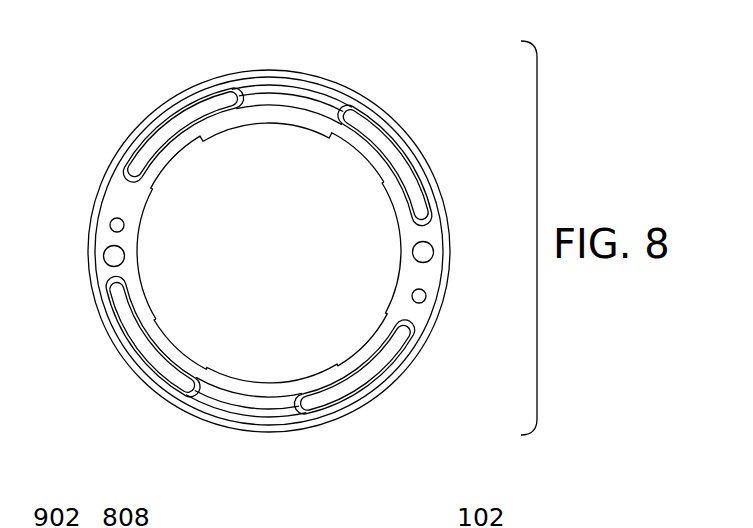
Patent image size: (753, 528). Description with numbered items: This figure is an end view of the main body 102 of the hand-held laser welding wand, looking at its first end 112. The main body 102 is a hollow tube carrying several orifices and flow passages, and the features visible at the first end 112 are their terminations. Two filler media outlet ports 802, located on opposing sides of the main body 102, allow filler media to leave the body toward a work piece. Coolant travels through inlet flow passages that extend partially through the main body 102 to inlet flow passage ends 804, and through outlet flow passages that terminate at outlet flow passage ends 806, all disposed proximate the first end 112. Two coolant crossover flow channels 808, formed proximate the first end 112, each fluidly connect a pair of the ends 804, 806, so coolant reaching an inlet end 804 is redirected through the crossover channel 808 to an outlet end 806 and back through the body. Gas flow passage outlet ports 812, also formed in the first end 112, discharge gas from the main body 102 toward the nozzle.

The main body 102 is at (156, 89).
The first end 112 is at (287, 80).
The outlet port 802 is at (104, 254).
The inlet flow passage end 804 is at (207, 113).
The outlet flow passage end 806 is at (413, 193).
The coolant crossover flow channel 808 is at (330, 108).
The gas flow passage outlet port 812 is at (171, 167).